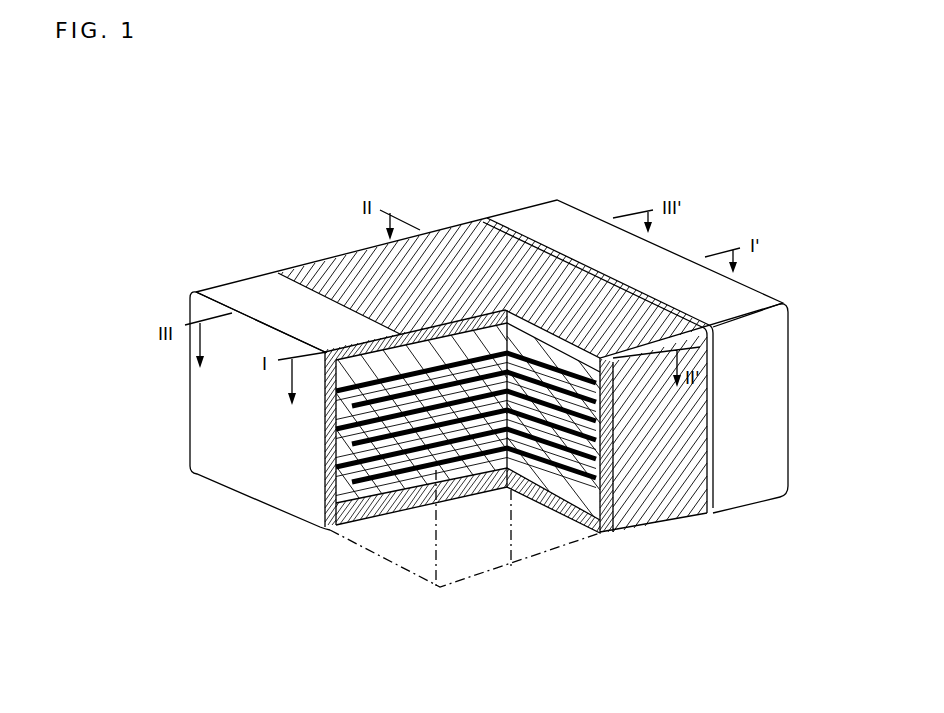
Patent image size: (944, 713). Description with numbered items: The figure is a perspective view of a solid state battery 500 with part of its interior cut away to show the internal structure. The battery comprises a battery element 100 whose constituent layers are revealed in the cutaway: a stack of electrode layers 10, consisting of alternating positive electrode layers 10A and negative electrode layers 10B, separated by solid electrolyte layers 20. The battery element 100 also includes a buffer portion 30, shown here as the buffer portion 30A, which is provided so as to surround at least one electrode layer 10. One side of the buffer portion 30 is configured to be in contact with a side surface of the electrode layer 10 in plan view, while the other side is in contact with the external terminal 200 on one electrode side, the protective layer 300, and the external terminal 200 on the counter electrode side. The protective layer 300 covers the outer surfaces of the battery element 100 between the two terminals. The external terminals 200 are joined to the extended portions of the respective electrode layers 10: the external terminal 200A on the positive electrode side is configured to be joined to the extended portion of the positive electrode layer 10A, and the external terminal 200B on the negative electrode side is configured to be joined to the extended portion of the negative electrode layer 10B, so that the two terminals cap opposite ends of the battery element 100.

The solid state battery 500 is at (762, 181).
The battery element 100 is at (620, 442).
The electrode layer 10 is at (466, 509).
The positive electrode layer 10A is at (390, 513).
The negative electrode layer 10B is at (472, 440).
The solid electrolyte layer 20 is at (497, 425).
The buffer portion 30 is at (453, 575).
The buffer portion 30A is at (343, 527).
The protective layer 300 is at (457, 275).
The external terminal 200 is at (476, 330).
The external terminal on positive electrode side 200A is at (568, 223).
The external terminal on negative electrode side 200B is at (243, 297).